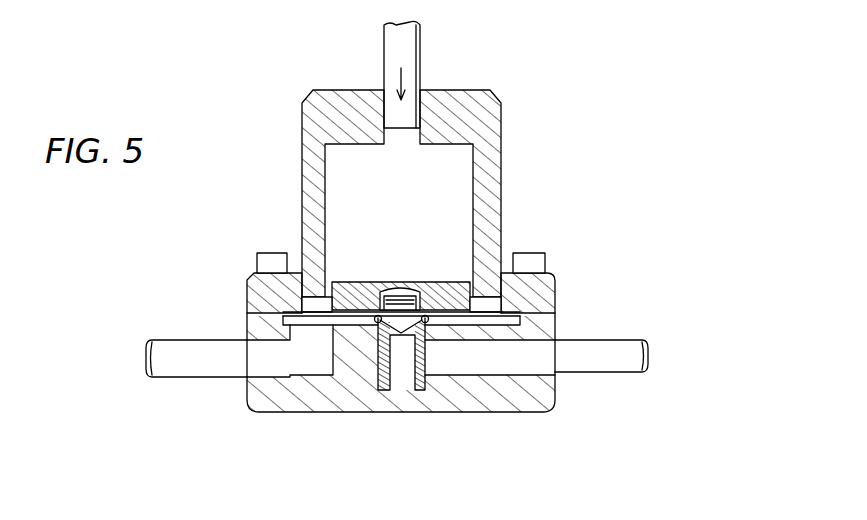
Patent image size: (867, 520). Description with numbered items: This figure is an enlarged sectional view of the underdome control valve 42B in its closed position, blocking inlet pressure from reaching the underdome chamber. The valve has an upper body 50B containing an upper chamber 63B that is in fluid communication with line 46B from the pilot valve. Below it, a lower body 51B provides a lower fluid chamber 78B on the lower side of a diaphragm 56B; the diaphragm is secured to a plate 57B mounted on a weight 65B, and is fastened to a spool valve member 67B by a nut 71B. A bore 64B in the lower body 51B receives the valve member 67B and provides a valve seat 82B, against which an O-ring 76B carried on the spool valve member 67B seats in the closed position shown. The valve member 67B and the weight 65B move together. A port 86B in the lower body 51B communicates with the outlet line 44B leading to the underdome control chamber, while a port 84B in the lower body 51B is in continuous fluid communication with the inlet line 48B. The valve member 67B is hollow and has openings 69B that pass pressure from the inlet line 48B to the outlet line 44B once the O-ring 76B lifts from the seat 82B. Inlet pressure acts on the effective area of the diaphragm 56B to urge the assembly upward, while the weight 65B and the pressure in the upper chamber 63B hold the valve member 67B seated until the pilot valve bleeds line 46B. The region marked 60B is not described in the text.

The underdome control valve 42B is at (531, 87).
The outlet line 44B is at (633, 338).
The line 46B is at (420, 40).
The inlet line 48B is at (165, 337).
The upper body 50B is at (502, 148).
The lower body 51B is at (520, 400).
The diaphragm 56B is at (500, 292).
The plate 57B is at (300, 256).
The valve seat 60B is at (437, 290).
The upper chamber 63B is at (460, 182).
The bore 64B is at (395, 368).
The weight 65B is at (395, 286).
The spool valve member 67B is at (407, 287).
The openings 69B is at (427, 362).
The nut 71B is at (403, 302).
The O-ring 76B is at (375, 368).
The lower fluid chamber 78B is at (520, 316).
The valve seat 82B is at (362, 298).
The port 84B is at (290, 348).
The port 86B is at (492, 342).